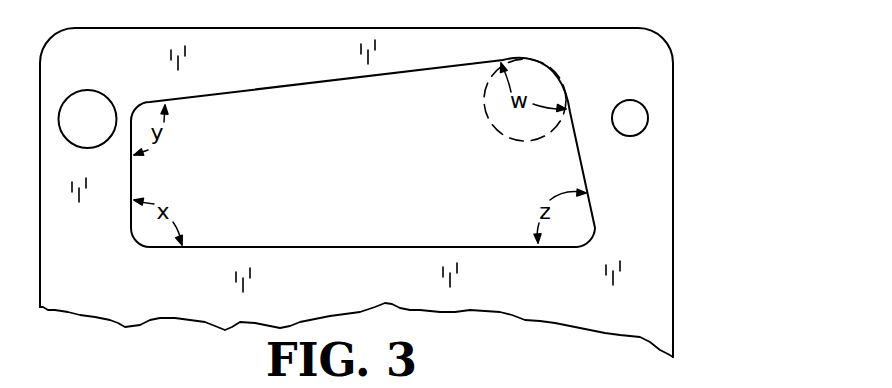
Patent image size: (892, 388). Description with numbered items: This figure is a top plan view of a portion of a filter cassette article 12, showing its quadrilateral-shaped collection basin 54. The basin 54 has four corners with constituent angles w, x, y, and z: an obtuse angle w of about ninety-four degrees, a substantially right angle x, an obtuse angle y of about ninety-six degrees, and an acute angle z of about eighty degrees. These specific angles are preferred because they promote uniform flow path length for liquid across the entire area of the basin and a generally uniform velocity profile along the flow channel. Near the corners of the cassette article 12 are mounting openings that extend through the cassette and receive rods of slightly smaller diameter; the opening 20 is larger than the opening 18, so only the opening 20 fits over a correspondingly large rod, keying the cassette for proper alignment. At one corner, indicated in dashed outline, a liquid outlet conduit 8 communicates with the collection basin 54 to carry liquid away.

The cassette article 12 is at (661, 204).
The opening 20 is at (90, 106).
The opening 18 is at (636, 110).
The collection basin 54 is at (303, 107).
The liquid outlet conduit 8 is at (489, 118).